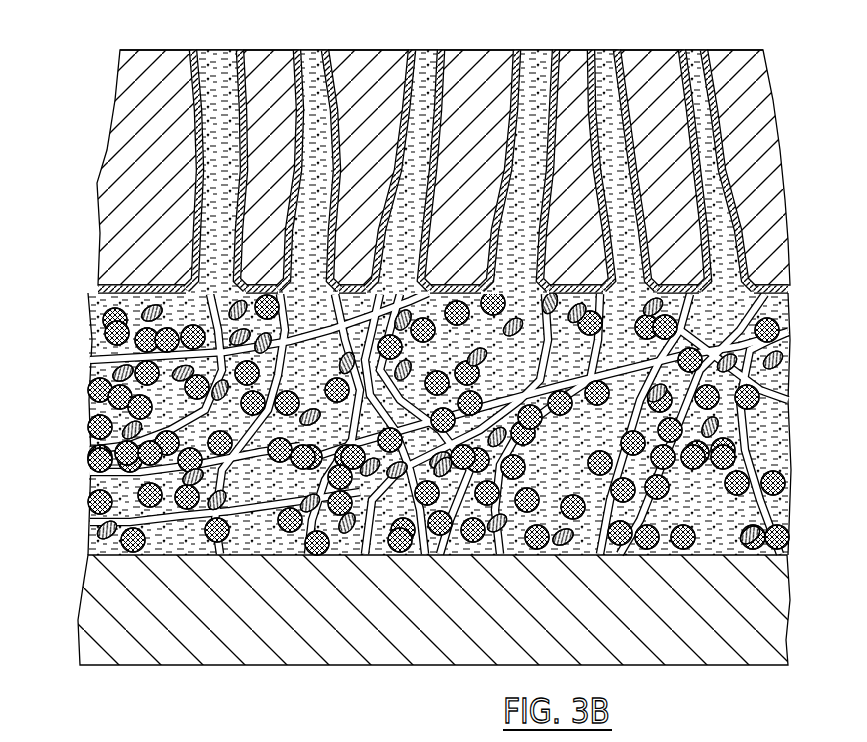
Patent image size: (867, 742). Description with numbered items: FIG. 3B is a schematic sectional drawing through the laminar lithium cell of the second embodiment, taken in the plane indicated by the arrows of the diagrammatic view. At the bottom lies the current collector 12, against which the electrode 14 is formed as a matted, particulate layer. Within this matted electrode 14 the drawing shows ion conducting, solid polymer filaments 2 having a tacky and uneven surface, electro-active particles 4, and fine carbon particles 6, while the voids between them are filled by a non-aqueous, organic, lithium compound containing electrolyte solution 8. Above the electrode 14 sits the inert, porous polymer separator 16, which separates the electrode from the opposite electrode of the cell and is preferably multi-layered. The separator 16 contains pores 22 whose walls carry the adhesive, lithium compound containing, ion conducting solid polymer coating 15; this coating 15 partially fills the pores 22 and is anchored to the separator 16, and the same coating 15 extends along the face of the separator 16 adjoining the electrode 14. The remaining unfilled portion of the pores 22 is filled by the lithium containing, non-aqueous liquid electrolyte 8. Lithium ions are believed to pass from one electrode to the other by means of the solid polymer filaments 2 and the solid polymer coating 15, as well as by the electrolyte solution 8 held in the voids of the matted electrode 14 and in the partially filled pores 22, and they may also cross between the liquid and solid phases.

The ion conducting solid polymer filaments 2 is at (105, 355).
The electro-active particles 4 is at (97, 322).
The fine carbon particles 6 is at (90, 390).
The lithium compound containing electrolyte solution 8 is at (88, 480).
The current collector 12 is at (80, 608).
The electrode 14 is at (90, 422).
The solid polymer coating 15 is at (414, 153).
The inert porous separator 16 is at (100, 183).
The pores 22 is at (599, 50).